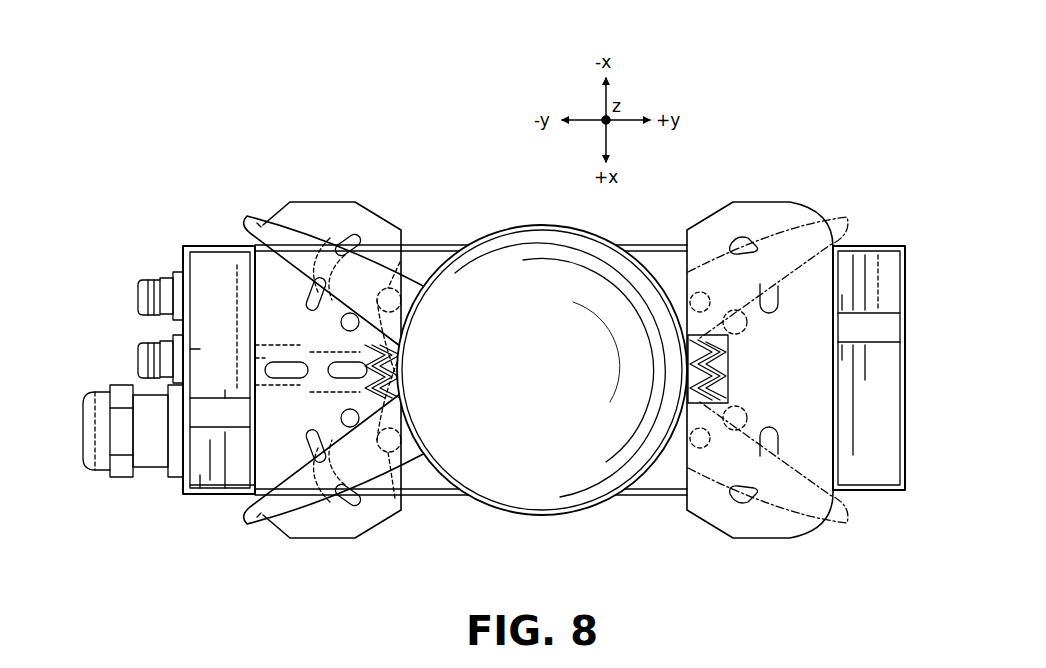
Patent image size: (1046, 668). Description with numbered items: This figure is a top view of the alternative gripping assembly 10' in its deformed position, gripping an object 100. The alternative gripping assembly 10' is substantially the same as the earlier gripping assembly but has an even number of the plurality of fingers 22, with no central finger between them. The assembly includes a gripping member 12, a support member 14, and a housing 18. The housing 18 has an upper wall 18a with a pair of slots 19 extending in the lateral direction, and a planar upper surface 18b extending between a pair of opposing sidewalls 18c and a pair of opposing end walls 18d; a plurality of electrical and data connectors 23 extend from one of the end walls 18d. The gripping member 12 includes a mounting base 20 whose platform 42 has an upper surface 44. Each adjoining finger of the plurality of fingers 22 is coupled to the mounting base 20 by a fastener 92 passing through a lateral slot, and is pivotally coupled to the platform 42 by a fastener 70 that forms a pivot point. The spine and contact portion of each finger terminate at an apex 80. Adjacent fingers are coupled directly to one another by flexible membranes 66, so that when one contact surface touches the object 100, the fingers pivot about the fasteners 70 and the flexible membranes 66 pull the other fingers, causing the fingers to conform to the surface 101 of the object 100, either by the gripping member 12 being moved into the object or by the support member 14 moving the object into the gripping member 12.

The alternative gripping assembly 10' is at (515, 332).
The gripping member 12 is at (218, 244).
The support member 14 is at (858, 232).
The housing 18 is at (650, 497).
The upper wall 18a is at (882, 490).
The upper surface 18b is at (880, 265).
The opposing sidewalls 18c is at (190, 247).
The opposing end walls 18d is at (183, 262).
The slots 19 is at (196, 432).
The mounting base 20 is at (312, 542).
The fingers 22 is at (228, 510).
The electrical and data connectors 23 is at (92, 374).
The platform 42 is at (290, 200).
The upper surface 44 is at (365, 540).
The flexible membranes 66 is at (368, 355).
The fastener 70 is at (400, 262).
The apex 80 is at (243, 214).
The fastener 92 is at (343, 238).
The object 100 is at (505, 213).
The surface 101 is at (577, 222).